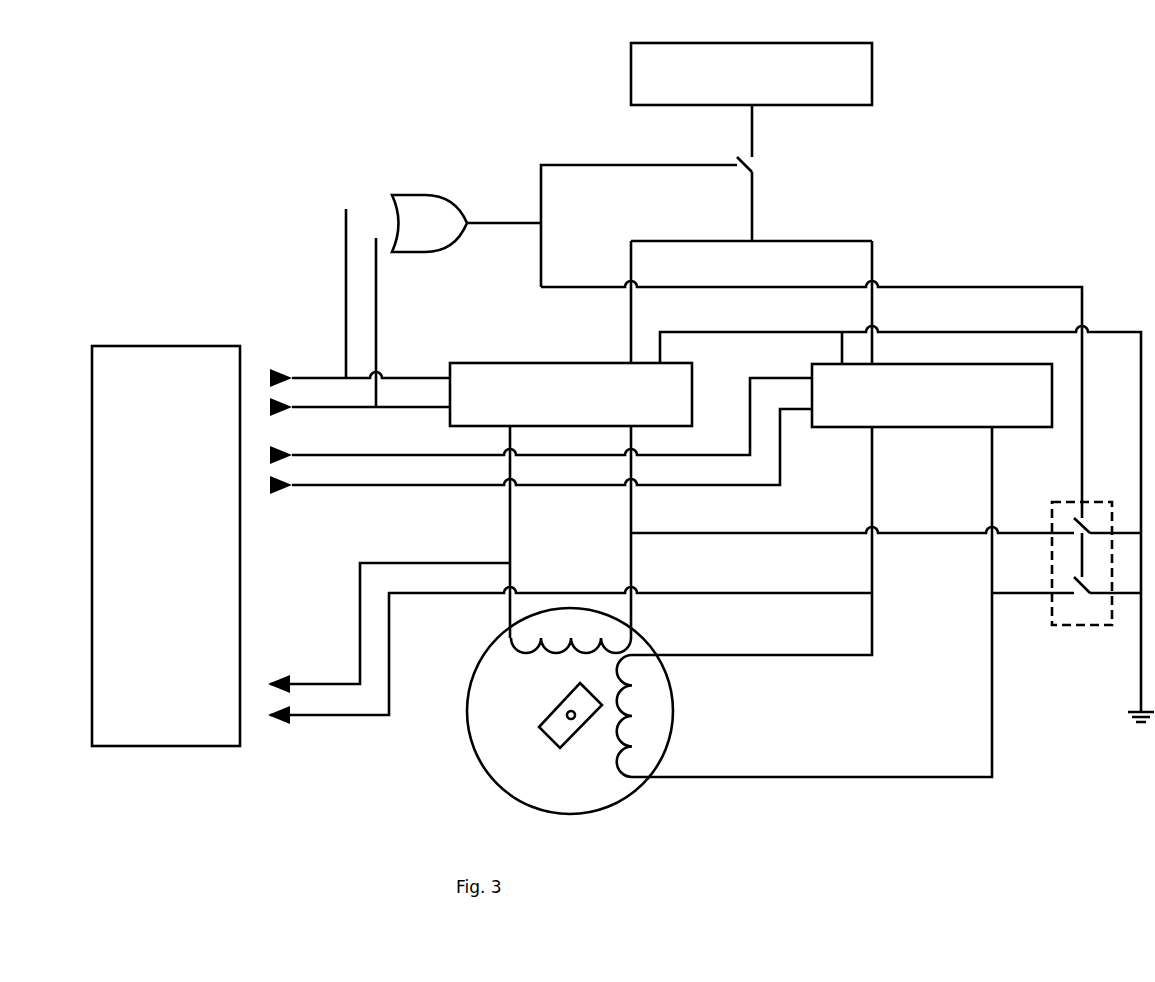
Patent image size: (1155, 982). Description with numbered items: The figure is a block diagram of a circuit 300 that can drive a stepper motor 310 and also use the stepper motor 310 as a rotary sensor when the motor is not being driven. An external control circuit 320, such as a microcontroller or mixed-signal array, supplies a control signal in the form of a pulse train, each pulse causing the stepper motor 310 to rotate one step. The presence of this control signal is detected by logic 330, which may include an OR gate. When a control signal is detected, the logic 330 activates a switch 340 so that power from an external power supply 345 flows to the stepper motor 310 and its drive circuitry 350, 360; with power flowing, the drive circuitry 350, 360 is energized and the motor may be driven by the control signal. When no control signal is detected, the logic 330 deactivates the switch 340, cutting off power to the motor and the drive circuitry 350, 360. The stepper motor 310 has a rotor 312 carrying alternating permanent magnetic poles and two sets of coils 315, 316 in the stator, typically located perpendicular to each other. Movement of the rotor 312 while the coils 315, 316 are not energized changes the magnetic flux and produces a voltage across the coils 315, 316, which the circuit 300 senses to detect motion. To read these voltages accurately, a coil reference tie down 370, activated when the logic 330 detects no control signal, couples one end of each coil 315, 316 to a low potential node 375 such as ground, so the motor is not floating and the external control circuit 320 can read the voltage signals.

The circuit 300 is at (985, 86).
The stepper motor 310 is at (559, 723).
The rotor 312 is at (563, 767).
The coil 315 is at (569, 665).
The coil 316 is at (660, 730).
The external control circuit 320 is at (189, 327).
The logic 330 is at (399, 177).
The switch 340 is at (772, 167).
The external power supply 345 is at (612, 73).
The drive circuitry 350 is at (539, 352).
The drive circuitry 360 is at (894, 448).
The coil reference tie down 370 is at (1087, 691).
The low potential node 375 is at (1133, 749).